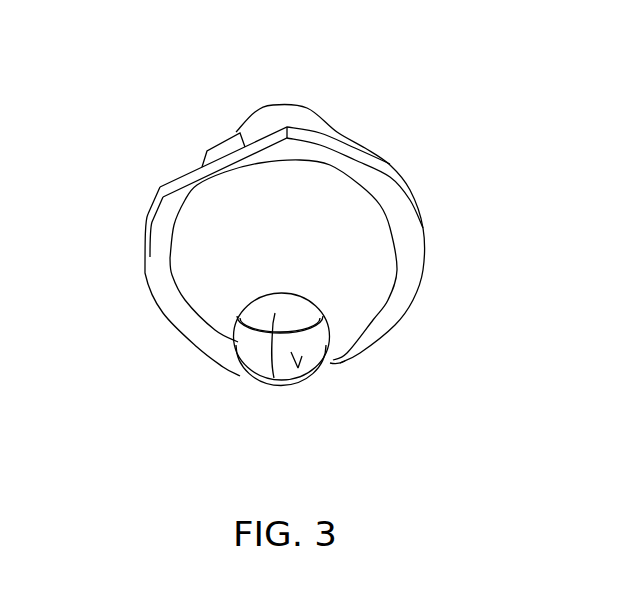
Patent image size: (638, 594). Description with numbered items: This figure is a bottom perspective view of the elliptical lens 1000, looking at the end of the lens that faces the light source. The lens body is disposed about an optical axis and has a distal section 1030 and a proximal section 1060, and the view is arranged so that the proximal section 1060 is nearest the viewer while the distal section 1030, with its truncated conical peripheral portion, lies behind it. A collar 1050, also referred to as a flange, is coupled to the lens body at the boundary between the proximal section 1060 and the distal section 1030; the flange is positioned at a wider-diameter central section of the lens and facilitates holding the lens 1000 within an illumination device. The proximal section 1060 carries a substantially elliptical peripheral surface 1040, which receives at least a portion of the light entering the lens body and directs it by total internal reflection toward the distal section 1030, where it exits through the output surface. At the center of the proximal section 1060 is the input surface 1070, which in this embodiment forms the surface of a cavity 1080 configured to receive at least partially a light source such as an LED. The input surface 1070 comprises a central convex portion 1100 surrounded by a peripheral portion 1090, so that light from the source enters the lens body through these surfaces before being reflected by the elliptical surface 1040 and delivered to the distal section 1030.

The lens 1000 is at (230, 438).
The distal section 1030 is at (307, 103).
The elliptical peripheral surface 1040 is at (377, 193).
The collar 1050 is at (414, 277).
The proximal section 1060 is at (210, 291).
The input surface 1070 is at (340, 361).
The cavity 1080 is at (243, 334).
The peripheral portion 1090 is at (300, 379).
The central convex portion 1100 is at (274, 378).